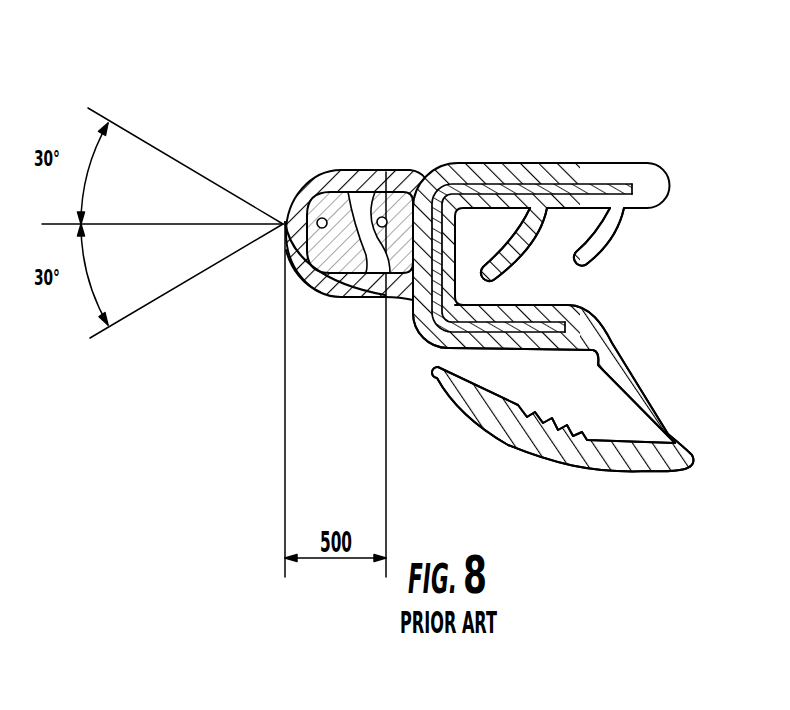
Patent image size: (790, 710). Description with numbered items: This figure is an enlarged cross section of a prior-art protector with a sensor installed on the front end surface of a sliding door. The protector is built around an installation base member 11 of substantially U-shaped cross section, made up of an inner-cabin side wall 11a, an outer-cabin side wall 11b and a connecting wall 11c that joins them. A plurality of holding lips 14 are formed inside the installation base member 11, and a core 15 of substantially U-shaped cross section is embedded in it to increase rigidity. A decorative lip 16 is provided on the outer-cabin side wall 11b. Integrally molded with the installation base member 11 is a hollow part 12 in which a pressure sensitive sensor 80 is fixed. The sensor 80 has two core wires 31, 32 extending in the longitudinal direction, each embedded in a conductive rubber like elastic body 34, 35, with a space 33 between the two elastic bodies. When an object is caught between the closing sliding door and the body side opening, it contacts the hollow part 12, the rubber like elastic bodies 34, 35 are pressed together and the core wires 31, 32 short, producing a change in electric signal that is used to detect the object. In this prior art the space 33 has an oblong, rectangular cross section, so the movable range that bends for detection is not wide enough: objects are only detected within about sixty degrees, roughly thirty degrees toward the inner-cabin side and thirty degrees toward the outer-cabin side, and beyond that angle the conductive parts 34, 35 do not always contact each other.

The installation base member 11 is at (582, 163).
The inner-cabin side wall 11a is at (513, 163).
The outer-cabin side wall 11b is at (512, 350).
The connecting wall 11c is at (423, 333).
The hollow part 12 is at (395, 168).
The holding lips 14 is at (590, 257).
The core 15 is at (445, 350).
The decorative lip 16 is at (552, 464).
The core wire 31 is at (322, 217).
The core wire 32 is at (381, 216).
The space 33 is at (367, 272).
The rubber like elastic body 34 is at (306, 282).
The rubber like elastic body 35 is at (403, 200).
The pressure sensitive sensor 80 is at (300, 252).